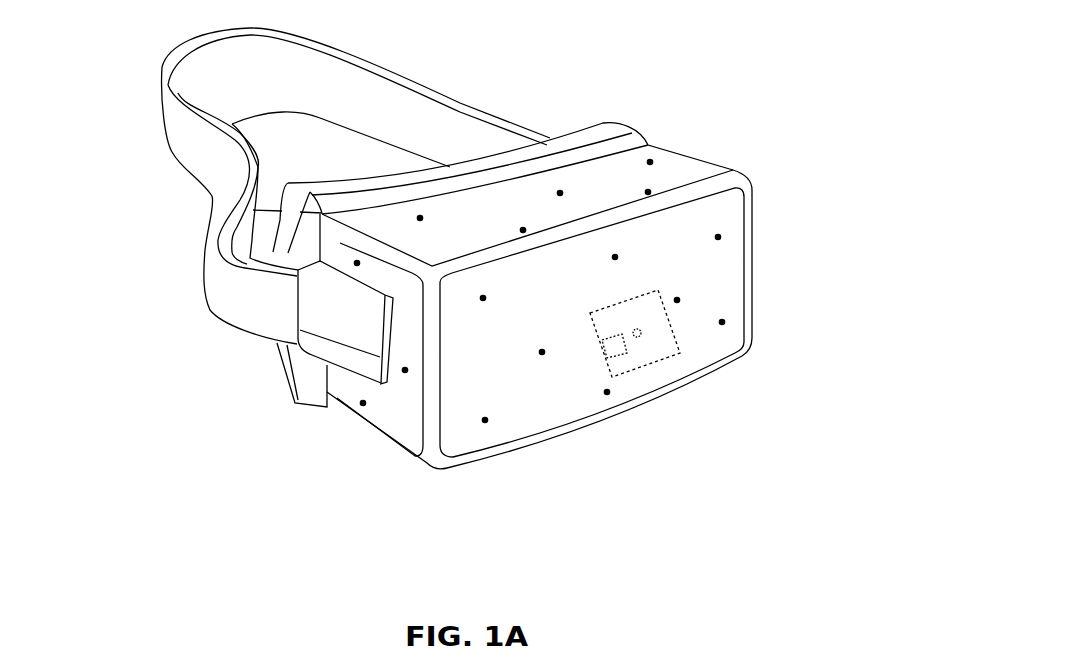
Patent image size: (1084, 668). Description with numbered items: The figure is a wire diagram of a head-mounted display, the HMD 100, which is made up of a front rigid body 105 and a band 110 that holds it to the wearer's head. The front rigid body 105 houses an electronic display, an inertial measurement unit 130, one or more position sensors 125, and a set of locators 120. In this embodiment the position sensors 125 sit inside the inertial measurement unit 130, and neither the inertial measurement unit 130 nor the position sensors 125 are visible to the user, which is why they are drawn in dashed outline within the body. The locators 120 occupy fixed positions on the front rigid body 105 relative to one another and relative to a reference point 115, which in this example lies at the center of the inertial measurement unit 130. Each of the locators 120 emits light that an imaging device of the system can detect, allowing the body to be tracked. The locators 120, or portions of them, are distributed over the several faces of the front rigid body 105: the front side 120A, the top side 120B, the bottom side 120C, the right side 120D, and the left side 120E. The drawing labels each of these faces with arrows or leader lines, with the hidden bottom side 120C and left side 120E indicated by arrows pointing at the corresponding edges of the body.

The HMD 100 is at (50, 30).
The band 110 is at (464, 95).
The front rigid body 105 is at (517, 315).
The top side 120B is at (397, 220).
The left side 120E is at (724, 158).
The bottom side 120C is at (343, 436).
The right side 120D is at (408, 407).
The front side 120A is at (473, 442).
The locators 120 is at (720, 322).
The inertial measurement unit 130 is at (680, 352).
The position sensors 125 is at (617, 347).
The reference point 115 is at (637, 337).